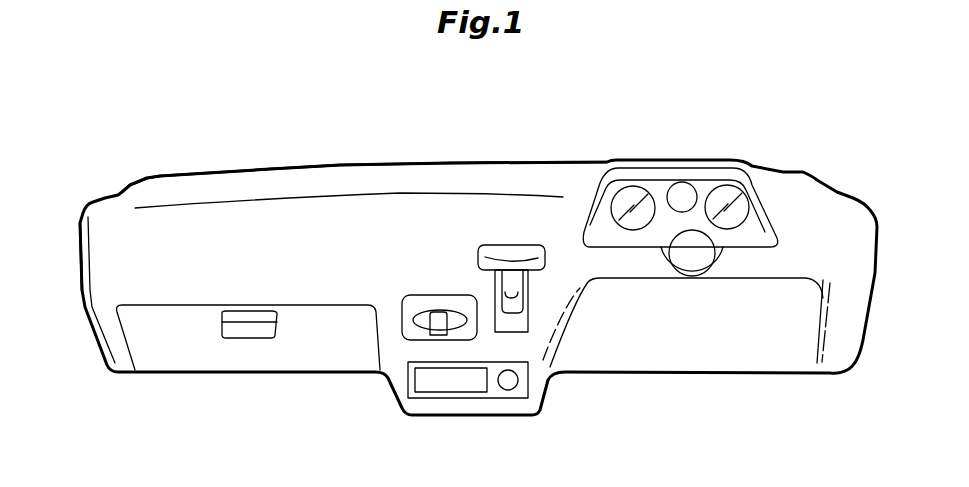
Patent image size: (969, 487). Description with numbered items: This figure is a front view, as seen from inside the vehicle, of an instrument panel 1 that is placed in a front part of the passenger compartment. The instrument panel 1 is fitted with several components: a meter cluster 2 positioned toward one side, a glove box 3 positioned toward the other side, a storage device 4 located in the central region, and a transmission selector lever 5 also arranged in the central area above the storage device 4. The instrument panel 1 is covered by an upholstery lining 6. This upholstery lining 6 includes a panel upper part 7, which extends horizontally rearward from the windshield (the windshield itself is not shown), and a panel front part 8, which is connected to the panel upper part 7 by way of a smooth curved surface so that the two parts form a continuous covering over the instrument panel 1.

The instrument panel 1 is at (826, 125).
The meter cluster 2 is at (633, 192).
The glove box 3 is at (270, 357).
The storage device 4 is at (410, 330).
The selector lever 5 is at (507, 245).
The upholstery lining 6 is at (240, 187).
The panel upper part 7 is at (178, 187).
The panel front part 8 is at (96, 241).